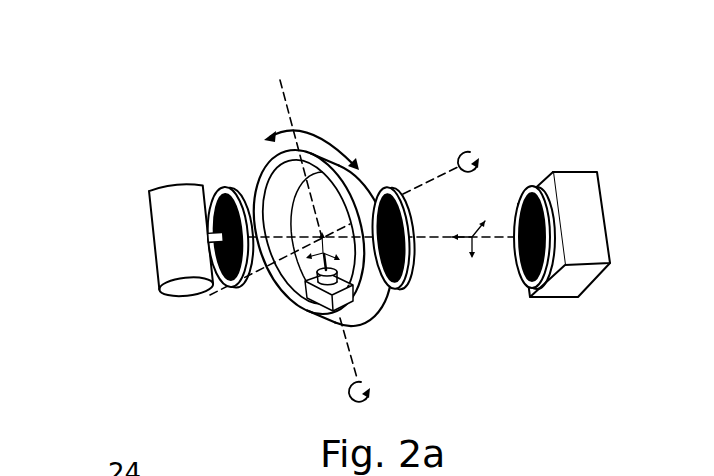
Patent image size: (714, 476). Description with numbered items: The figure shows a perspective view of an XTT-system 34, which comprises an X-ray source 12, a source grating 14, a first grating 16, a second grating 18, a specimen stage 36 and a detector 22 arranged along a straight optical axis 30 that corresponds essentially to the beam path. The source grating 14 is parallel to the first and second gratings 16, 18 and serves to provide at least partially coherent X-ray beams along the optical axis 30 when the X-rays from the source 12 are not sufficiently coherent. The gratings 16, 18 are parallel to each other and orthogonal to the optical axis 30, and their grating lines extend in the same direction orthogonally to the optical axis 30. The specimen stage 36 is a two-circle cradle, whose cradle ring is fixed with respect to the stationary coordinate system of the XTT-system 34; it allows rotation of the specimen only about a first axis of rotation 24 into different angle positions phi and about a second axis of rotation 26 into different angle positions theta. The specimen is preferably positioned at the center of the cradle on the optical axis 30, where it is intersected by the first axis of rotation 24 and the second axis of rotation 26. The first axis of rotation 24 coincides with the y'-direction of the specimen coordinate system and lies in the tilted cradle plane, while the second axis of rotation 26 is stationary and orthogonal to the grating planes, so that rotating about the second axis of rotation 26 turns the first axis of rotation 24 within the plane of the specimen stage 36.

The XTT-system 34 is at (116, 72).
The X-ray source 12 is at (172, 184).
The source grating 14 is at (224, 187).
The first axis of rotation 24 is at (282, 79).
The specimen stage 36 is at (364, 122).
The first grating 16 is at (385, 186).
The second axis of rotation 26 is at (429, 181).
The second grating 18 is at (528, 186).
The detector 22 is at (580, 171).
The optical axis 30 is at (427, 242).